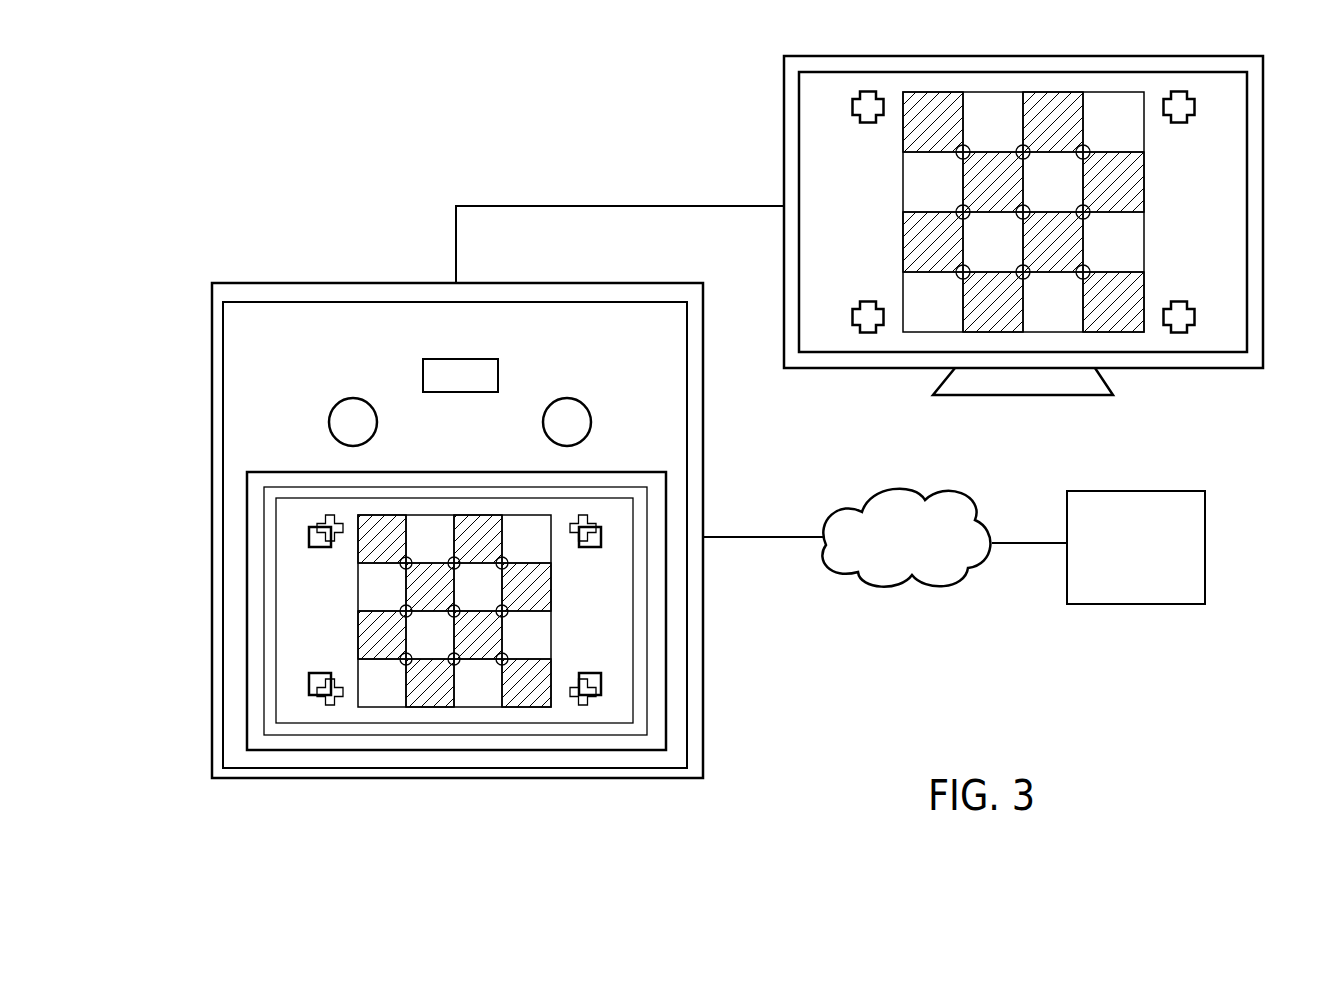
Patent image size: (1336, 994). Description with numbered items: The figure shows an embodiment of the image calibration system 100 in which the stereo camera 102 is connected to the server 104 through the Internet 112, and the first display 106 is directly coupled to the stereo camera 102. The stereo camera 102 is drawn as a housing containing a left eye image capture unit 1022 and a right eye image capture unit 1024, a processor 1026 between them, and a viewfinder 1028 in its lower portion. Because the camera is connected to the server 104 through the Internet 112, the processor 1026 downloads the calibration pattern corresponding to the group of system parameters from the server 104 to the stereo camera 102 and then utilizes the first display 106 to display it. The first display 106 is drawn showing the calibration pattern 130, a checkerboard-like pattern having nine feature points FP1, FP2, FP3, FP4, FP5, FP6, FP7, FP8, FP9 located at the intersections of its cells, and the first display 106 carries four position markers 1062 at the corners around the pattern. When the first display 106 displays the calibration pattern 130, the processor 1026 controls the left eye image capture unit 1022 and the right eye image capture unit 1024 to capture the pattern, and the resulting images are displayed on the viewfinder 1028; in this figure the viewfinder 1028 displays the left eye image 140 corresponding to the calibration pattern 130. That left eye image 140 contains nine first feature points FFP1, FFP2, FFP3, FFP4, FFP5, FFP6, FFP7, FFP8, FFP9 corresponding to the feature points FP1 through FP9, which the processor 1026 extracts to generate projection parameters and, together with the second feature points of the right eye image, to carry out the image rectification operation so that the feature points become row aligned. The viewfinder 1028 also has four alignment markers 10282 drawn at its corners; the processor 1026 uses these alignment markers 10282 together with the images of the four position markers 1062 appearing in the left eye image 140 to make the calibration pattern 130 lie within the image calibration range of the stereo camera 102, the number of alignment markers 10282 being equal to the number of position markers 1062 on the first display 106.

The image calibration system 100 is at (260, 283).
The stereo camera 102 is at (315, 301).
The left eye image capture unit 1022 is at (329, 422).
The right eye image capture unit 1024 is at (591, 422).
The processor 1026 is at (498, 376).
The viewfinder 1028 is at (666, 643).
The alignment markers 10282 is at (309, 541).
The left eye image 140 is at (647, 688).
The first display 106 is at (1263, 187).
The position markers 1062 is at (852, 107).
The calibration pattern 130 is at (1144, 221).
The Internet 112 is at (884, 487).
The server 104 is at (1207, 548).
The feature point FP1 is at (966, 147).
The feature point FP2 is at (1025, 159).
The feature point FP3 is at (1086, 146).
The feature point FP4 is at (960, 205).
The feature point FP5 is at (1018, 218).
The feature point FP6 is at (1088, 219).
The feature point FP7 is at (960, 279).
The feature point FP8 is at (1028, 278).
The feature point FP9 is at (1082, 279).
The first feature point FFP1 is at (407, 557).
The first feature point FFP2 is at (455, 569).
The first feature point FFP3 is at (503, 557).
The first feature point FFP4 is at (403, 605).
The first feature point FFP5 is at (452, 617).
The first feature point FFP6 is at (503, 617).
The first feature point FFP7 is at (405, 665).
The first feature point FFP8 is at (456, 665).
The first feature point FFP9 is at (508, 658).